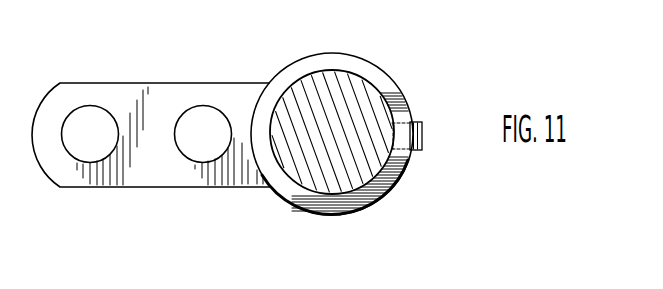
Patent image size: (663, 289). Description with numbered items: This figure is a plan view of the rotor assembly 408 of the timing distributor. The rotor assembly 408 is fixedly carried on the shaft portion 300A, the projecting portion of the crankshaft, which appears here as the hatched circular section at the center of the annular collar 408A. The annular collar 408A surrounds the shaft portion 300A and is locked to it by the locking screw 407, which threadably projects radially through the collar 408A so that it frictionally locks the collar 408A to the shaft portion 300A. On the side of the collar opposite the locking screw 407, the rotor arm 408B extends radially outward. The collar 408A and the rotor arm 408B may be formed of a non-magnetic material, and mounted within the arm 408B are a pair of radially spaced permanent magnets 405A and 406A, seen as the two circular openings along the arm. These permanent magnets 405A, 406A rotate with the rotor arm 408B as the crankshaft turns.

The rotor assembly 408 is at (266, 61).
The annular collar 408A is at (373, 73).
The rotor arm 408B is at (142, 184).
The permanent magnet 405A is at (88, 120).
The permanent magnet 406A is at (195, 120).
The shaft portion 300A is at (313, 167).
The locking screw 407 is at (422, 143).